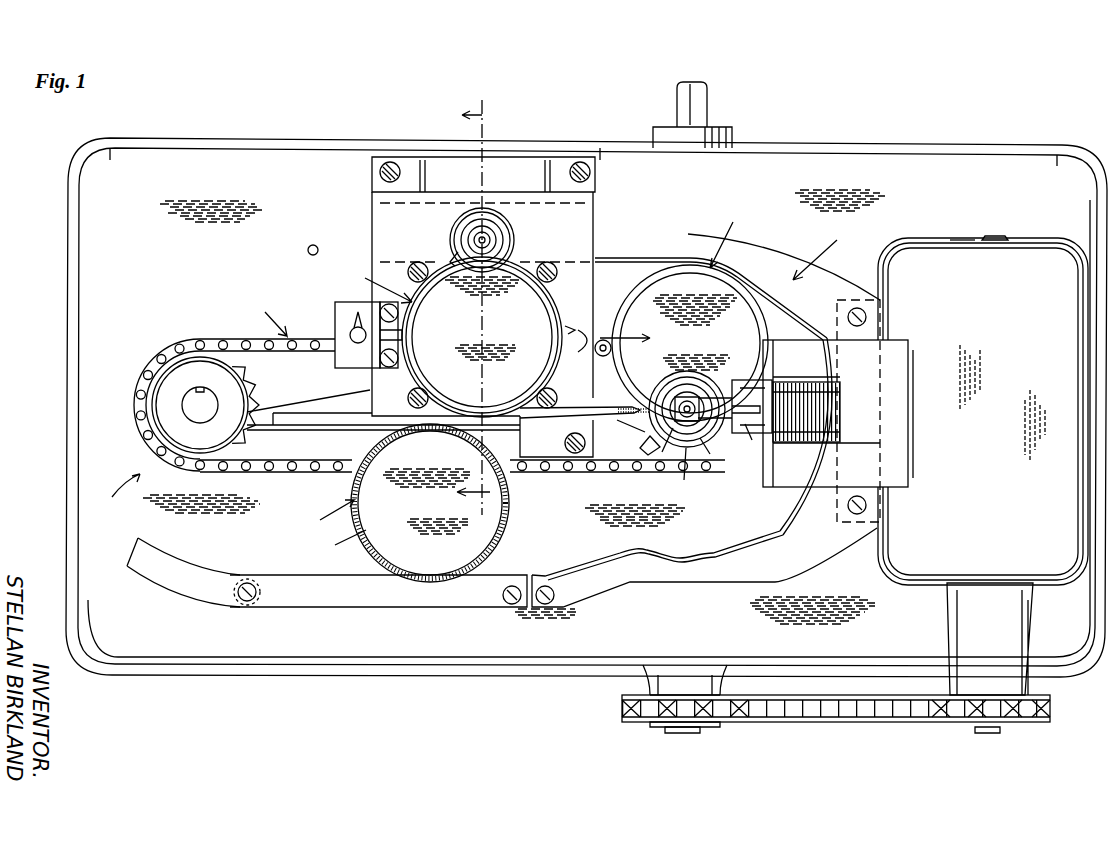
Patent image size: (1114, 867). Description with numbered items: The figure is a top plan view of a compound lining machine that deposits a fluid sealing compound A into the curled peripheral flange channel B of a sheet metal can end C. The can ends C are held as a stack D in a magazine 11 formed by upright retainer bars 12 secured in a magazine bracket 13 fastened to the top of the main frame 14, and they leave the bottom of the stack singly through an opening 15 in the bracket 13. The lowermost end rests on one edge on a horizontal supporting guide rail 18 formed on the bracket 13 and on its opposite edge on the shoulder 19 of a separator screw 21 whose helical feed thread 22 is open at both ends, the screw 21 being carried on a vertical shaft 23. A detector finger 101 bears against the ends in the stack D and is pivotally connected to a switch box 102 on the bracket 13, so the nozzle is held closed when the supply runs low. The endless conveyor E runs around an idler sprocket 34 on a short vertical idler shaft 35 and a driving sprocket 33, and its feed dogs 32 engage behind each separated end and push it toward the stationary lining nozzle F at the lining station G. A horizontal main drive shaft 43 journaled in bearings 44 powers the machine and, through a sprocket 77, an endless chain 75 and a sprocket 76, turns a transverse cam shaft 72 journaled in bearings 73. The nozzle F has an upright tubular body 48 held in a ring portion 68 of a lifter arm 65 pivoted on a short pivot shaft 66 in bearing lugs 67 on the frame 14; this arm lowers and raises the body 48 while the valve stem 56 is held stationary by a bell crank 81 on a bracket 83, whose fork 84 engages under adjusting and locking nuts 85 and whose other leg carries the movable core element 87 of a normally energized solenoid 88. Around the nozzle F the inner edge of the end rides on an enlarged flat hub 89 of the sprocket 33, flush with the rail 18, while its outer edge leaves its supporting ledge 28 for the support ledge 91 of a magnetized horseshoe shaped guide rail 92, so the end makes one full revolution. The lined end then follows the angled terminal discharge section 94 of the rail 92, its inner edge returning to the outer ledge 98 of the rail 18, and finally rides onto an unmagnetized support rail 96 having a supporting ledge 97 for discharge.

The frame 14 is at (290, 170).
The magazine bracket 13 is at (372, 215).
The retainer bars 12 is at (410, 265).
The shoulder or ledge 19 is at (504, 228).
The helical feed thread 22 is at (458, 232).
The vertical shaft 23 is at (480, 252).
The separator screw 21 is at (484, 238).
The supporting ledge 28 is at (452, 258).
The opening 15 is at (554, 382).
The magazine 11 is at (565, 313).
The switch box 102 is at (345, 314).
The detector finger 101 is at (396, 334).
The idler shaft 35 is at (200, 405).
The idler sprocket 34 is at (262, 392).
The feed pins or dogs 32 is at (146, 354).
The outer ledge 98 is at (355, 430).
The supporting guide rail 18 is at (606, 410).
The valve stem 56 is at (688, 400).
The adjusting and locking nuts 85 is at (676, 398).
The hub 89 is at (646, 440).
The driving sprocket 33 is at (650, 444).
The tubular body 48 is at (670, 442).
The ring portion 68 is at (698, 448).
The fork 84 is at (705, 398).
The bell crank 81 is at (727, 398).
The electric solenoid 88 is at (843, 414).
The bracket 83 is at (840, 403).
The lifter arm 65 is at (736, 440).
The movable core element 87 is at (747, 424).
The bearing lugs 67 is at (790, 345).
The pivot shaft 66 is at (798, 500).
The support ledge 91 is at (626, 260).
The guide rail 92 is at (692, 238).
The support rail 96 is at (378, 592).
The supporting ledge 97 is at (340, 578).
The terminal discharge section 94 is at (580, 576).
The bearings 73 is at (962, 240).
The cam shaft 72 is at (992, 236).
The main drive shaft 43 is at (700, 100).
The bearings 44 is at (732, 136).
The endless chain 75 is at (840, 710).
The sprocket 77 is at (638, 706).
The sprocket 76 is at (966, 706).
The fluid sealing compound A is at (411, 503).
The curled peripheral flange portion or channel B is at (523, 368).
The sheet metal end member or cover C is at (569, 401).
The stack D is at (377, 282).
The conveyor E is at (267, 313).
The lining nozzle F is at (687, 450).
The lining or treating station G is at (822, 253).